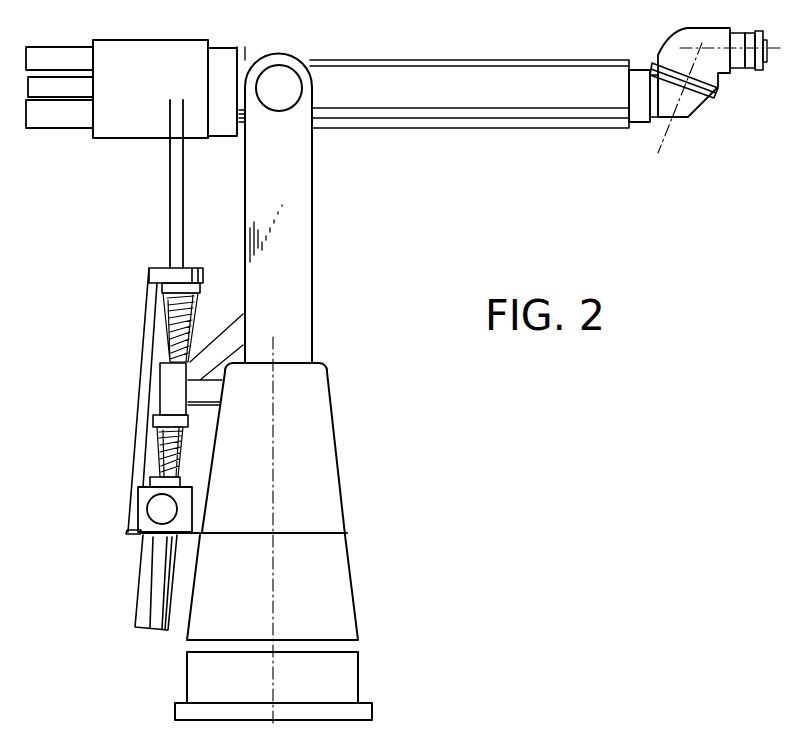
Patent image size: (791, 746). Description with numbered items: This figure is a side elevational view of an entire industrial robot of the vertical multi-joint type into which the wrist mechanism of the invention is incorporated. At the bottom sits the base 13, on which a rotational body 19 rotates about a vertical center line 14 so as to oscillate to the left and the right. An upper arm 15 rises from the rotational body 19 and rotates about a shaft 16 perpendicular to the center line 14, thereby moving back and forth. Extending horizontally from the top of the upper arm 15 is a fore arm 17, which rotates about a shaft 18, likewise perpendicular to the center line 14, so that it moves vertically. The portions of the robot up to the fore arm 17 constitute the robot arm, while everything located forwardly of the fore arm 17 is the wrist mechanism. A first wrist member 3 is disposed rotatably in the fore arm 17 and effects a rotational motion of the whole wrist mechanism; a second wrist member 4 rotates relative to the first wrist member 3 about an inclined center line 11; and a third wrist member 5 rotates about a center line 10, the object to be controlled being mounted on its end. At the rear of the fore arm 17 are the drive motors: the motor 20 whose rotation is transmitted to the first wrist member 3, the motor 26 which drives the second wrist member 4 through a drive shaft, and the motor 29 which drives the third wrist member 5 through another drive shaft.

The first wrist member 3 is at (637, 122).
The second wrist member 4 is at (668, 42).
The third wrist member 5 is at (767, 52).
The center line 10 is at (739, 66).
The inclined center line 11 is at (677, 140).
The base 13 is at (360, 673).
The center line 14 is at (275, 476).
The upper arm 15 is at (312, 220).
The shaft 16 is at (270, 395).
The fore arm 17 is at (470, 130).
The shaft 18 is at (283, 78).
The rotational body 19 is at (355, 597).
The motor 20 is at (72, 128).
The motor 26 is at (77, 46).
The motor 29 is at (28, 88).